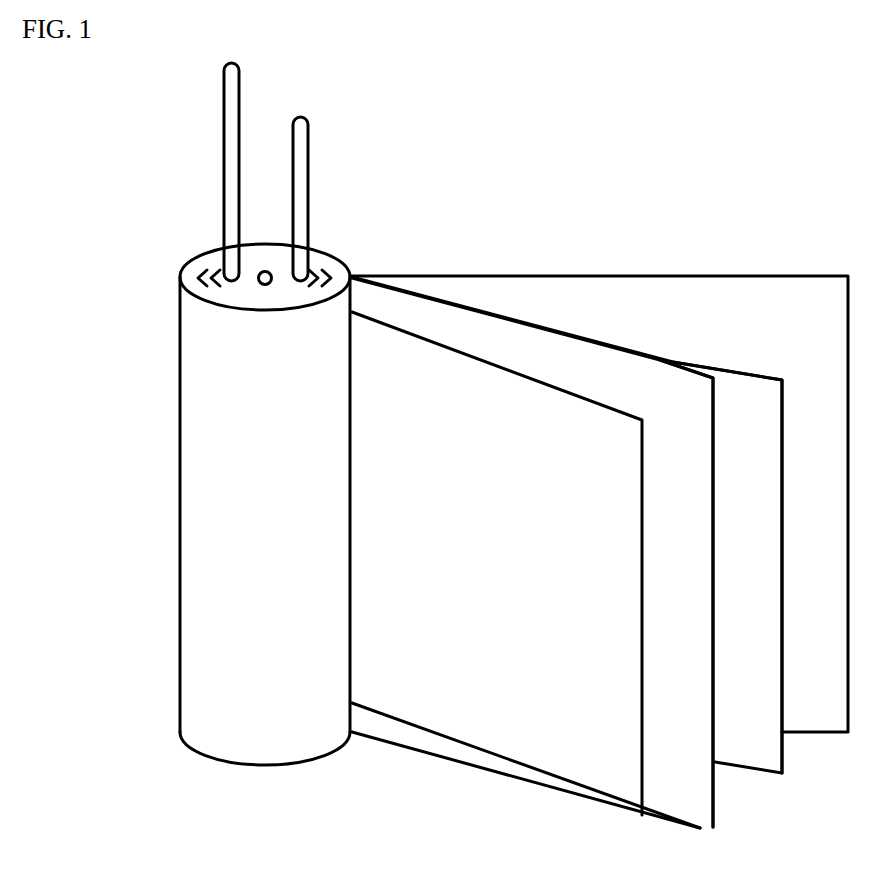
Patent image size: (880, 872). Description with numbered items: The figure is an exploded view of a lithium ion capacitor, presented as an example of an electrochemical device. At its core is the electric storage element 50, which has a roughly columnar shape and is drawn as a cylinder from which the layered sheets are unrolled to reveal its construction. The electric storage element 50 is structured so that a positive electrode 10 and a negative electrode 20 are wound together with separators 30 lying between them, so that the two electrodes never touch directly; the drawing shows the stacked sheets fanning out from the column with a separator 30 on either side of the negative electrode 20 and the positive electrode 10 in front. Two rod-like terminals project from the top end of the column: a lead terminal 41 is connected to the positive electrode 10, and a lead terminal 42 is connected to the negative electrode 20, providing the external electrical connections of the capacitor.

The positive electrode 10 is at (597, 550).
The negative electrode 20 is at (747, 402).
The separators 30 is at (678, 405).
The lead terminal 41 is at (223, 178).
The lead terminal 42 is at (309, 182).
The electric storage element 50 is at (180, 492).